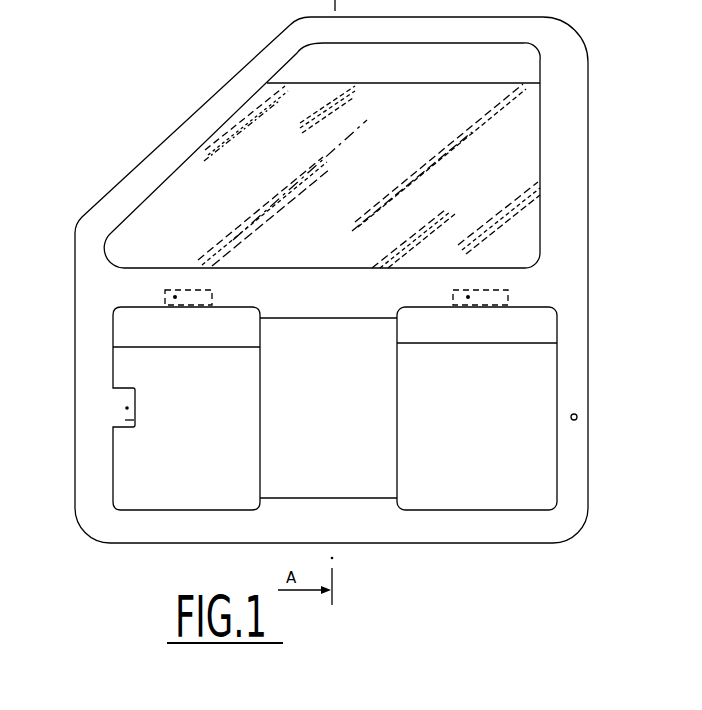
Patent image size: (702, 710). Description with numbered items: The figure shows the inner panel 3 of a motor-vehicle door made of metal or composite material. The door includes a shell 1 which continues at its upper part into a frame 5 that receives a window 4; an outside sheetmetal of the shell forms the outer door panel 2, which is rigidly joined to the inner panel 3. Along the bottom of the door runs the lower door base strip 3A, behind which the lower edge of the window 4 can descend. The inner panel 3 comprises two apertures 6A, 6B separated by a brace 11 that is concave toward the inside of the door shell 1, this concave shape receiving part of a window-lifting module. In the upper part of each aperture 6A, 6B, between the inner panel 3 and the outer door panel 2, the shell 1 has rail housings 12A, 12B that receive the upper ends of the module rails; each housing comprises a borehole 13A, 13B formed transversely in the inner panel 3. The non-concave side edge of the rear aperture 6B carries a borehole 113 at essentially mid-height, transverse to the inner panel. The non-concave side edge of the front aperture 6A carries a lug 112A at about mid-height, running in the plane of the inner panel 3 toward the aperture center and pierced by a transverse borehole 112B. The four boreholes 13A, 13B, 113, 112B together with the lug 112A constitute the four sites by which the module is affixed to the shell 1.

The shell 1 is at (68, 381).
The outer door panel 2 is at (486, 437).
The inner panel 3 is at (578, 479).
The lower door base strip 3A is at (417, 543).
The window 4 is at (360, 187).
The frame 5 is at (568, 139).
The aperture 6A is at (151, 480).
The aperture 6B is at (532, 394).
The brace 11 is at (346, 428).
The rail housing 12A is at (193, 290).
The rail housing 12B is at (498, 304).
The borehole 13A is at (175, 298).
The borehole 13B is at (469, 296).
The lug 112A is at (136, 426).
The transverse borehole 112B is at (129, 408).
The borehole 113 is at (578, 419).